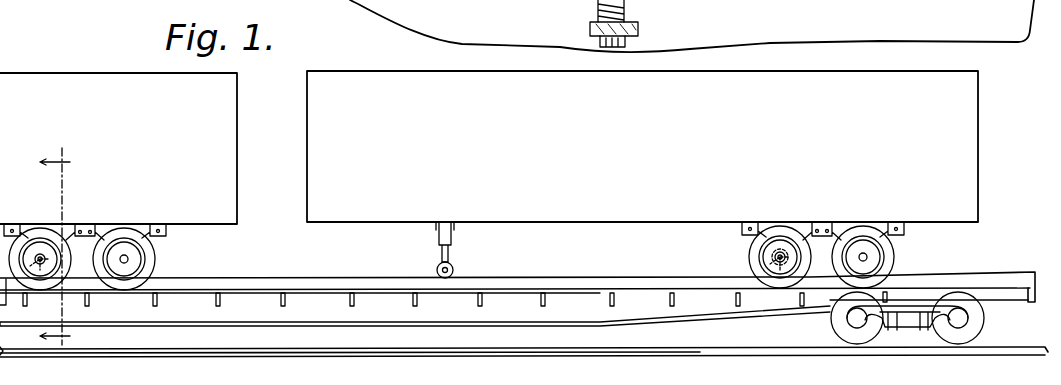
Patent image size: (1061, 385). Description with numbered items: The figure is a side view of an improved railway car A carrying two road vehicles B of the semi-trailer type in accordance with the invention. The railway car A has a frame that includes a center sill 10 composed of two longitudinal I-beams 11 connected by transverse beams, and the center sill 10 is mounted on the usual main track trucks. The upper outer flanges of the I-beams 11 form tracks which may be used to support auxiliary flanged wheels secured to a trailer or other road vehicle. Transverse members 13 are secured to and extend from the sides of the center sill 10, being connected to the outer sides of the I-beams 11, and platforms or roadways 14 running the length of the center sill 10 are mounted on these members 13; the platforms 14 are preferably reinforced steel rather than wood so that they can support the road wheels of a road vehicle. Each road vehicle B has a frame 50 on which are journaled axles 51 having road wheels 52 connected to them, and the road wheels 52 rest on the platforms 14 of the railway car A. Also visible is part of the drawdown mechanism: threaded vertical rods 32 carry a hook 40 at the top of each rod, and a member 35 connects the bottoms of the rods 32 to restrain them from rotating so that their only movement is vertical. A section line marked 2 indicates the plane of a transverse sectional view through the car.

The railway car A is at (253, 275).
The road vehicle B is at (232, 160).
The section line 2- 2 is at (60, 244).
The center sill 10 is at (507, 277).
The longitudinal I-beams 11 is at (586, 309).
The transverse members 13 is at (330, 312).
The platforms 14 is at (591, 288).
The threaded vertical rods 32 is at (62, 240).
The member 35 is at (592, 27).
The hook 40 is at (772, 257).
The frame 50 is at (87, 227).
The axles 51 is at (38, 255).
The road wheels 52 is at (40, 233).